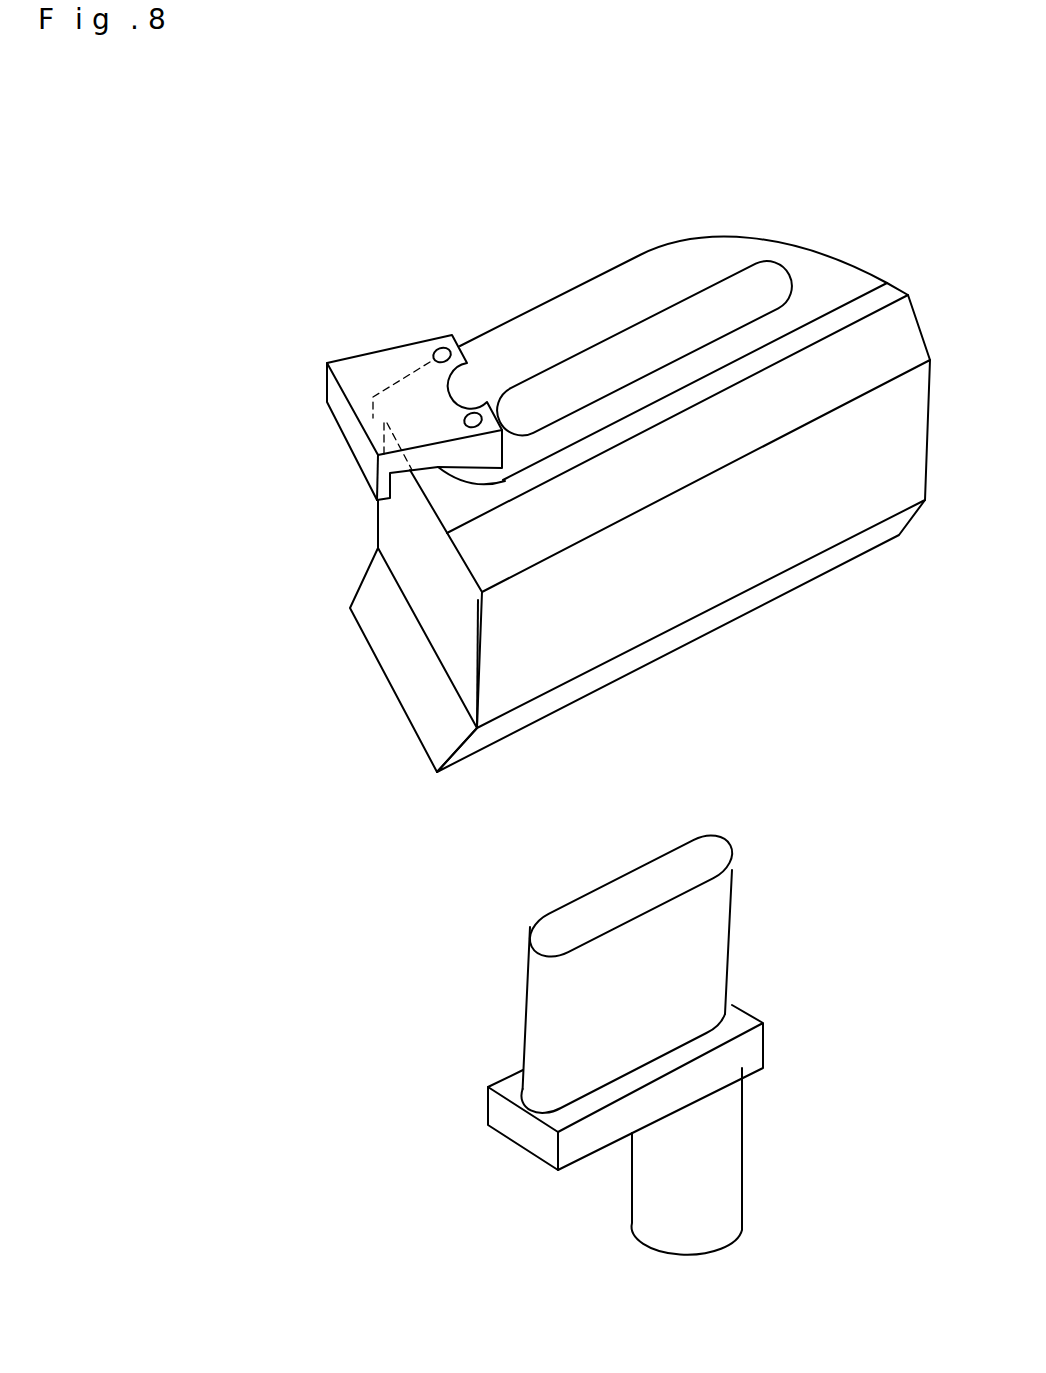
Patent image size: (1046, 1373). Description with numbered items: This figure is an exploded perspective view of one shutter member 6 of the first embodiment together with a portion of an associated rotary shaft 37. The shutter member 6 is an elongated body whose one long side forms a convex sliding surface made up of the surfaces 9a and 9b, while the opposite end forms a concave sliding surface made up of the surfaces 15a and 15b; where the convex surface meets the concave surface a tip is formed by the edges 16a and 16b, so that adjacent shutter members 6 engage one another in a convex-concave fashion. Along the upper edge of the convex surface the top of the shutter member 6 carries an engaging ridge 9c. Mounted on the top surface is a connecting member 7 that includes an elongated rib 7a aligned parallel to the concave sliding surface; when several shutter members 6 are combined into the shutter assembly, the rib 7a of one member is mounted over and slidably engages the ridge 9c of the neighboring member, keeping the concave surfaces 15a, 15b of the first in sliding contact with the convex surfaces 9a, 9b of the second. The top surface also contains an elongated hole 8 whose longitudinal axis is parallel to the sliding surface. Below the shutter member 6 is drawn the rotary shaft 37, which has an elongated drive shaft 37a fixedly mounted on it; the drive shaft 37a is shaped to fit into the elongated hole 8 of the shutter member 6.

The shutter member 6 is at (603, 292).
The connecting member 7 is at (348, 370).
The elongated rib 7a is at (375, 500).
The elongated hole 8 is at (742, 295).
The surface 9a is at (715, 563).
The surface 9b is at (707, 620).
The engaging ridge 9c is at (793, 343).
The surface 15a is at (440, 602).
The surface 15b is at (380, 635).
The edge 16a is at (480, 670).
The edge 16b is at (462, 748).
The rotary shaft 37 is at (723, 1177).
The drive shaft 37a is at (700, 953).